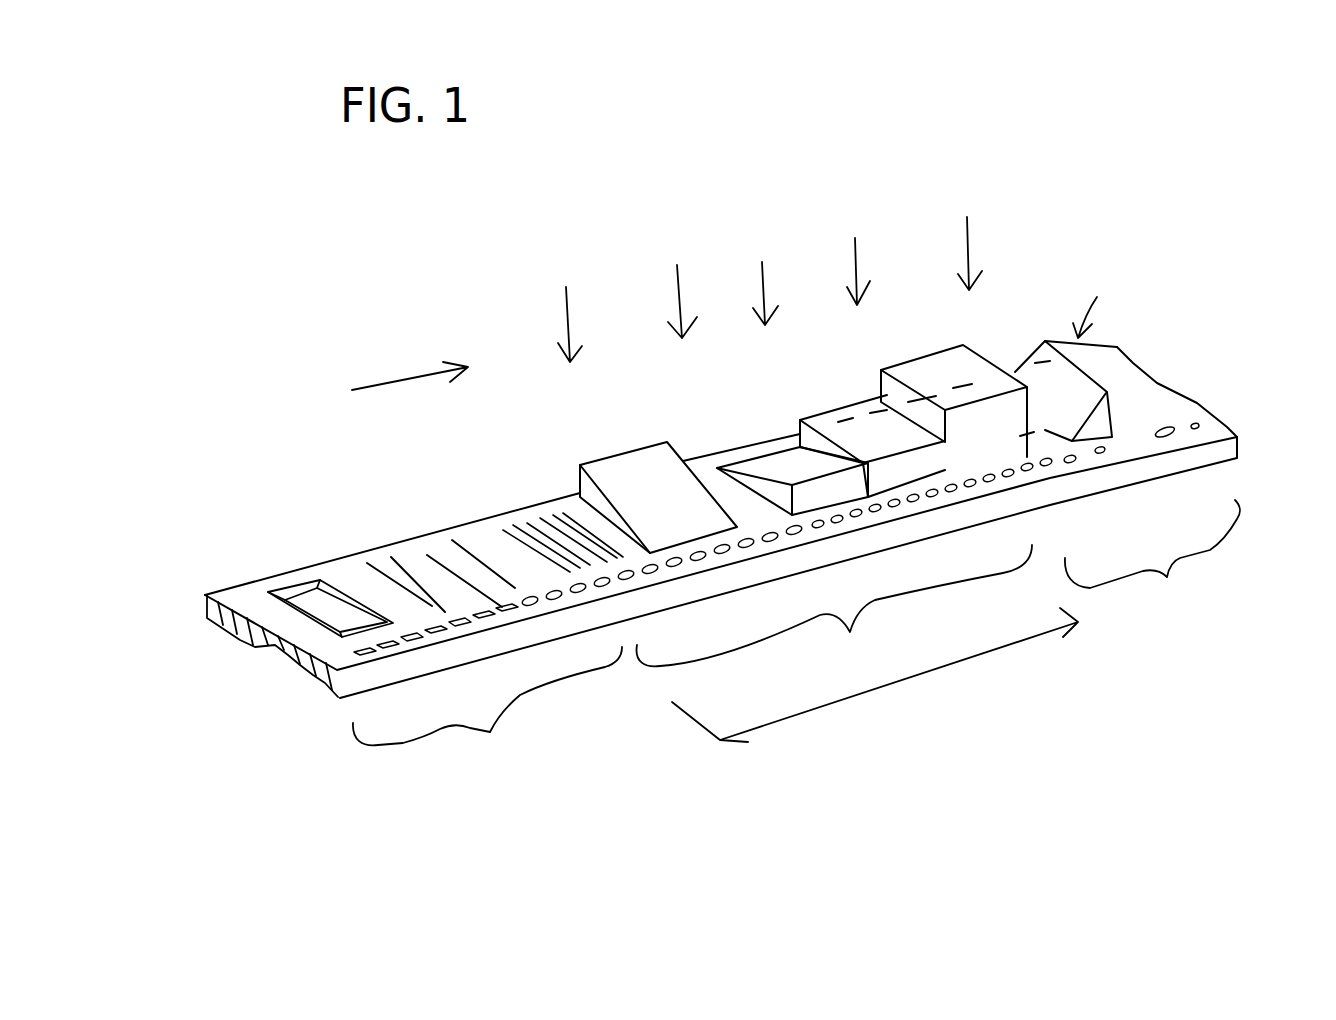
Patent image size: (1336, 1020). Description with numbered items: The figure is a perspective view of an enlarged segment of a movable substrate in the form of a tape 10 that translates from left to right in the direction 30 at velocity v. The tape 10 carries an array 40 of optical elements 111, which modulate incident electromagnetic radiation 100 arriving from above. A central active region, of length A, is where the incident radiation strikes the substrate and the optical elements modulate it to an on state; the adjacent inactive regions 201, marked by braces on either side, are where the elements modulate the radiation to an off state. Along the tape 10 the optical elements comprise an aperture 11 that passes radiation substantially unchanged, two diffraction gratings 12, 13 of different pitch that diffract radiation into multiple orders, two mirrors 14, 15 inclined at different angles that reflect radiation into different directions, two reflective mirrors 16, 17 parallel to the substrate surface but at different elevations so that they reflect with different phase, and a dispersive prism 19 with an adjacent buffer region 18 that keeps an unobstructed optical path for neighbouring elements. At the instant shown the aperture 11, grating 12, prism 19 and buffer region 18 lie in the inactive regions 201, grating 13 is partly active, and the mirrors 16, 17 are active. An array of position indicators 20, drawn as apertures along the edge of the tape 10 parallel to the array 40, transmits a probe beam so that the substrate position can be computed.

The tape 10 is at (245, 597).
The aperture 11 is at (308, 595).
The diffraction grating 12 is at (427, 554).
The diffraction grating 13 is at (528, 512).
The mirror 14 is at (628, 460).
The mirror 15 is at (772, 463).
The reflective mirror 16 is at (843, 420).
The reflective mirror 17 is at (940, 368).
The buffer region 18 is at (1025, 434).
The dispersive prism 19 is at (1044, 340).
The array of position indicators 20 is at (1142, 420).
The direction 30 is at (412, 372).
The array of optical elements 40 is at (232, 692).
The incident EM radiation 100 is at (858, 262).
The optical elements 111 is at (1097, 297).
The inactive regions 201 is at (796, 647).
The length of the active region A is at (908, 680).